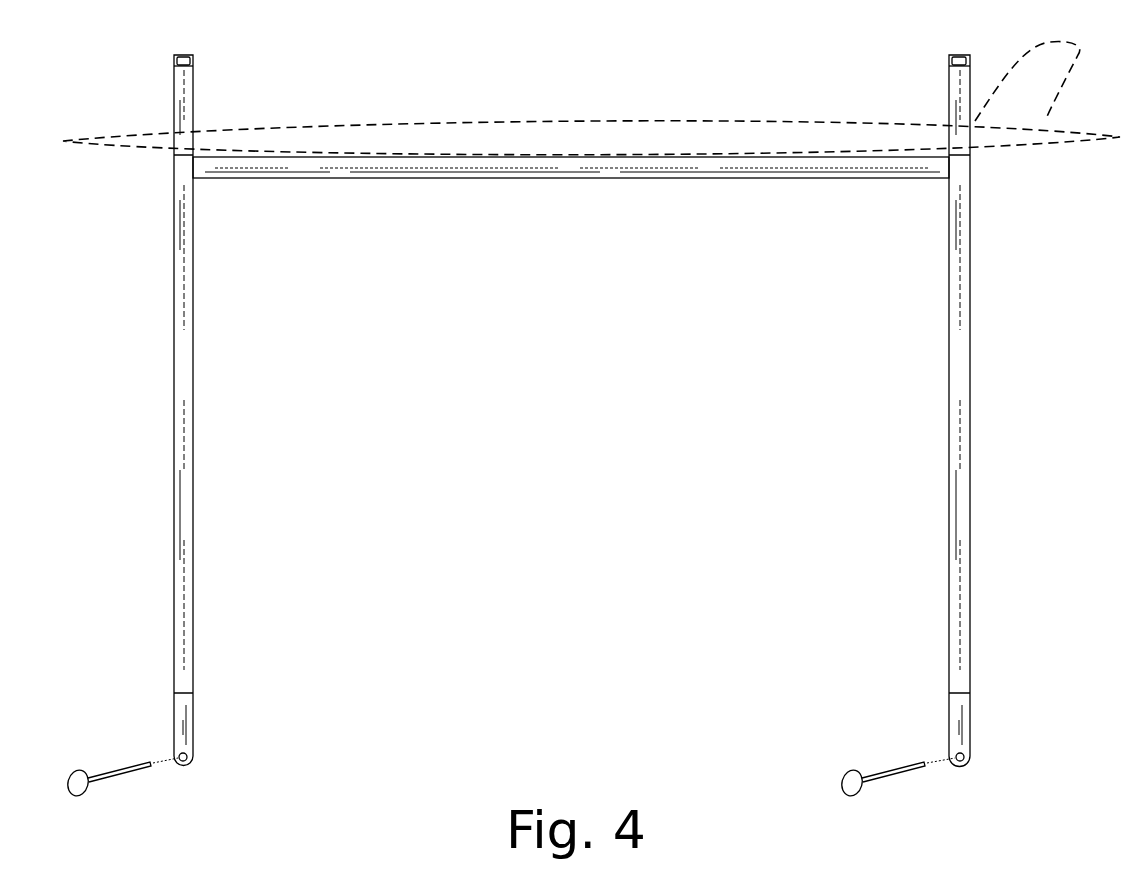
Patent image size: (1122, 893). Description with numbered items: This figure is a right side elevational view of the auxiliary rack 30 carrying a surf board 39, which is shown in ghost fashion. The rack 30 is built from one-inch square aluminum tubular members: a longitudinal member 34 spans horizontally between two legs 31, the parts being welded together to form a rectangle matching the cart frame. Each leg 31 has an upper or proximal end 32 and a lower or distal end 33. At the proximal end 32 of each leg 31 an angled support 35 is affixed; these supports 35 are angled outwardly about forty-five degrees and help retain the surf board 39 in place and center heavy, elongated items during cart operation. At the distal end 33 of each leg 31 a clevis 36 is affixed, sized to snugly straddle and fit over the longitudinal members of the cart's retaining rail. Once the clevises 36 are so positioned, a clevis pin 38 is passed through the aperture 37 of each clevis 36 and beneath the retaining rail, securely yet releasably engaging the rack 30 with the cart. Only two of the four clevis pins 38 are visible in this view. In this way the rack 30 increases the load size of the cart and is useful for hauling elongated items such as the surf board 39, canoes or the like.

The auxiliary rack 30 is at (980, 66).
The leg 31 is at (182, 430).
The proximal end 32 is at (172, 160).
The distal end 33 is at (195, 680).
The longitudinal member 34 is at (594, 169).
The angled support 35 is at (181, 88).
The clevis 36 is at (186, 728).
The aperture 37 is at (194, 758).
The clevis pin 38 is at (122, 778).
The surf board 39 is at (588, 130).